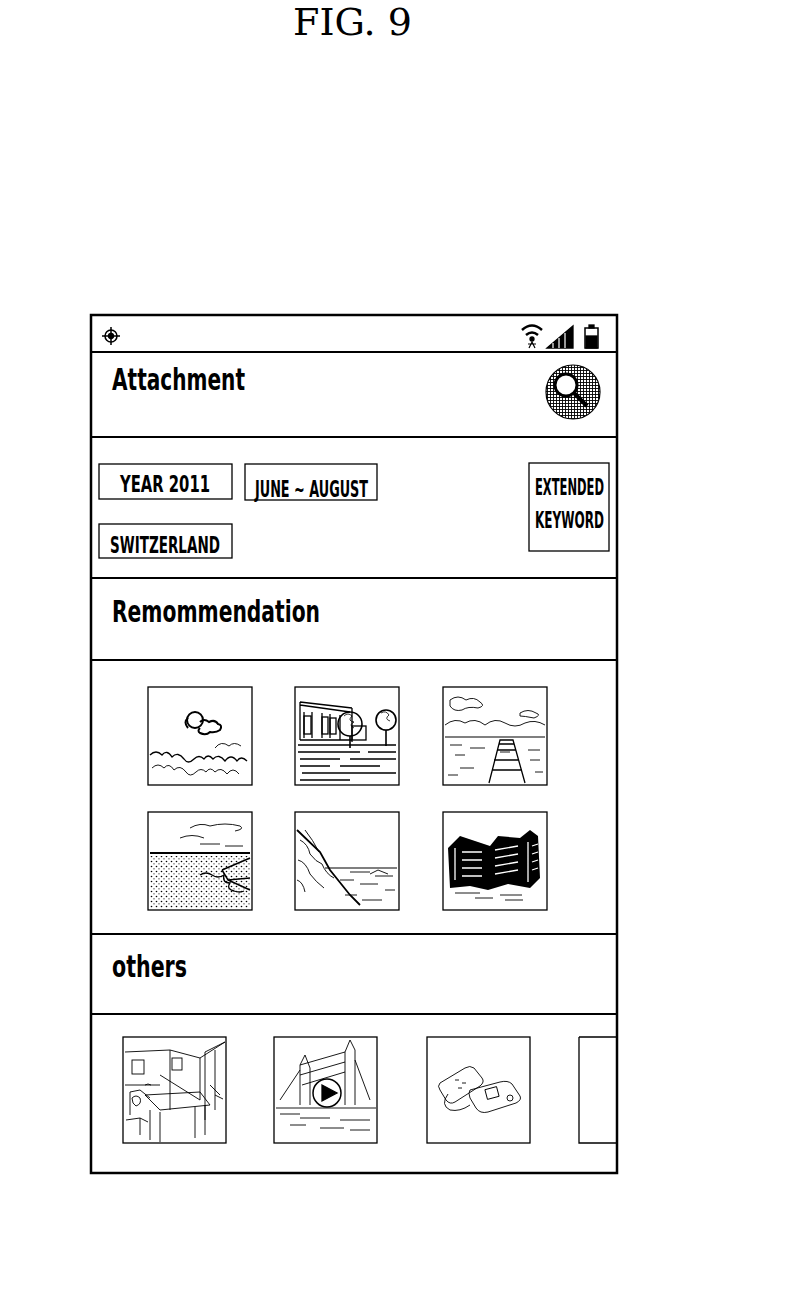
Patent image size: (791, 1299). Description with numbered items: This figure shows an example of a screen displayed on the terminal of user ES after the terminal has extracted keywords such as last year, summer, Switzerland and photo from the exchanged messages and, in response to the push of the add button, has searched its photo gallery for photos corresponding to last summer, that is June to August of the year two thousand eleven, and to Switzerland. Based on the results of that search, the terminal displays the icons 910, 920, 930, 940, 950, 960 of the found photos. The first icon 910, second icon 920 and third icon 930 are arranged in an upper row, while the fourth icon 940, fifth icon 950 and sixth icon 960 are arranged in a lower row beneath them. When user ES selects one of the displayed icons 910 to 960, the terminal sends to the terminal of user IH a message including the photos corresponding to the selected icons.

The icon of found photo 910 is at (148, 745).
The icon of found photo 920 is at (399, 687).
The icon of found photo 930 is at (546, 740).
The icon of found photo 940 is at (148, 872).
The icon of found photo 950 is at (399, 812).
The icon of found photo 960 is at (546, 870).